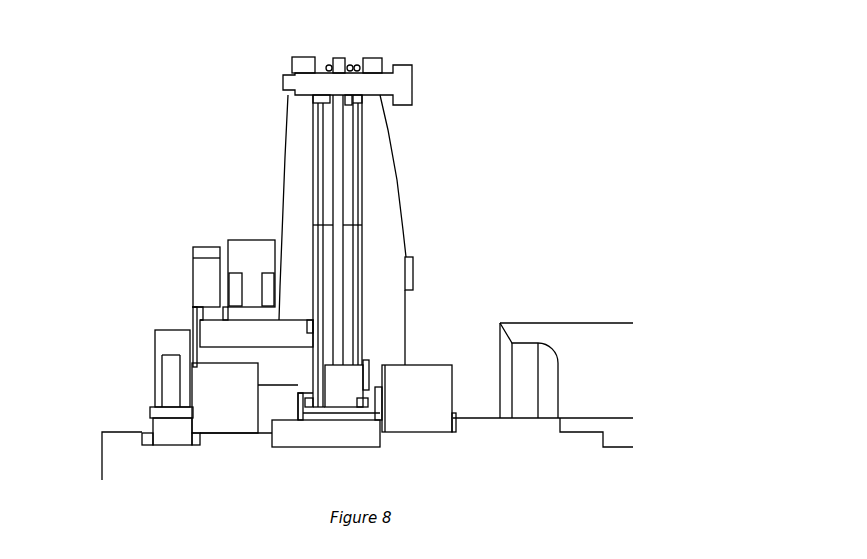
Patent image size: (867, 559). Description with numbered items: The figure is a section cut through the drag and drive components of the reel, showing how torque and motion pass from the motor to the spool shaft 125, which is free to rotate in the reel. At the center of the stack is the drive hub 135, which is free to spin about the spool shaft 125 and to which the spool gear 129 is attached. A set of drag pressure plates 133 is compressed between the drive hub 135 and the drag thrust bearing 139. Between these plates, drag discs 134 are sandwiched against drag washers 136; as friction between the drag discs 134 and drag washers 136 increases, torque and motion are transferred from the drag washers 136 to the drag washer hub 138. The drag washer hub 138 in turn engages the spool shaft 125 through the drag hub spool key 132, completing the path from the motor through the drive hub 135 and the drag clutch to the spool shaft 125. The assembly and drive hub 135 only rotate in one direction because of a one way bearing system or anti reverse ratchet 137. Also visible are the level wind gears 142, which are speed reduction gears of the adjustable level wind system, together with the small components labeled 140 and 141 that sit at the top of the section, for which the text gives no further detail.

The spool shaft 125 is at (520, 429).
The spool gear 129 is at (231, 225).
The drag hub spool key 132 is at (324, 422).
The drag pressure plates 133 is at (356, 130).
The drag discs 134 is at (334, 200).
The drive hub 135 is at (197, 293).
The drag washers 136 is at (343, 281).
The anti reverse ratchet 137 is at (256, 338).
The drag washer hub 138 is at (364, 360).
The drag thrust bearing 139 is at (450, 374).
The connector components 140 is at (335, 57).
The top plate 141 is at (422, 90).
The level wind gears 142 is at (145, 361).